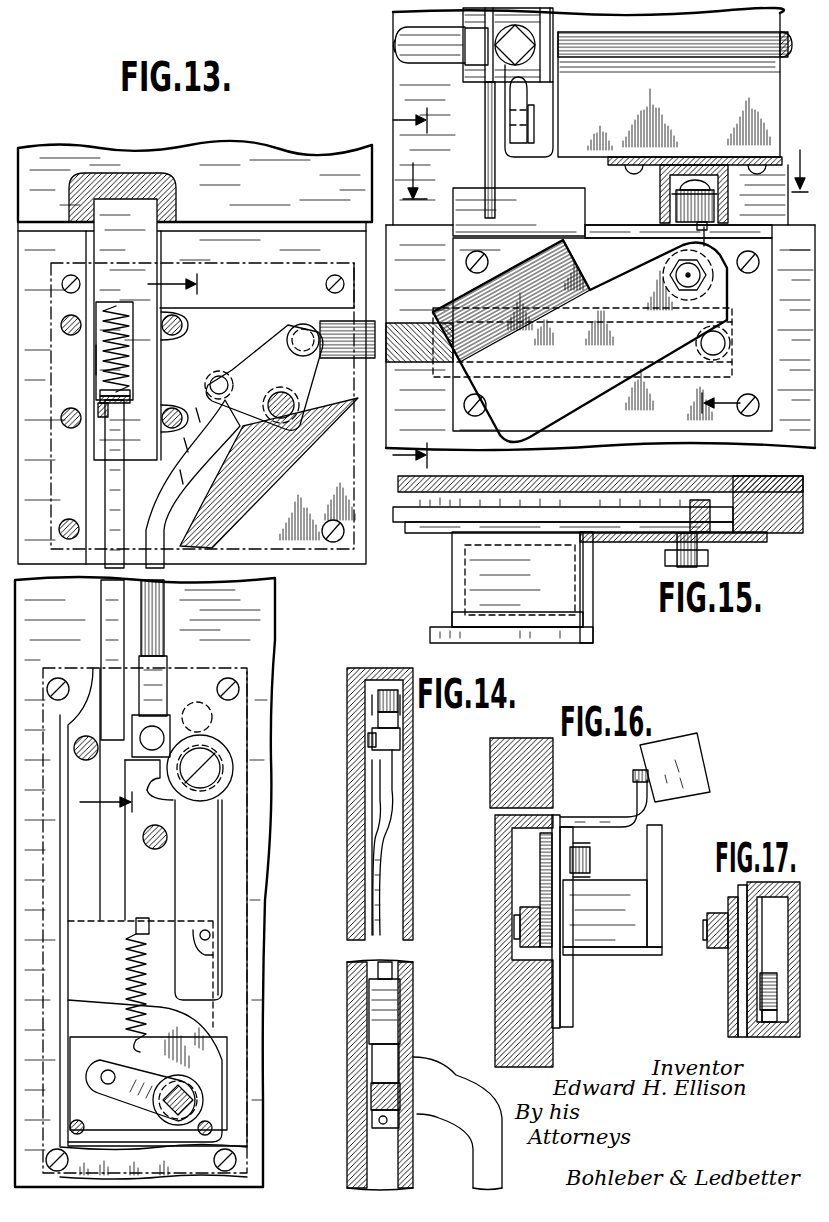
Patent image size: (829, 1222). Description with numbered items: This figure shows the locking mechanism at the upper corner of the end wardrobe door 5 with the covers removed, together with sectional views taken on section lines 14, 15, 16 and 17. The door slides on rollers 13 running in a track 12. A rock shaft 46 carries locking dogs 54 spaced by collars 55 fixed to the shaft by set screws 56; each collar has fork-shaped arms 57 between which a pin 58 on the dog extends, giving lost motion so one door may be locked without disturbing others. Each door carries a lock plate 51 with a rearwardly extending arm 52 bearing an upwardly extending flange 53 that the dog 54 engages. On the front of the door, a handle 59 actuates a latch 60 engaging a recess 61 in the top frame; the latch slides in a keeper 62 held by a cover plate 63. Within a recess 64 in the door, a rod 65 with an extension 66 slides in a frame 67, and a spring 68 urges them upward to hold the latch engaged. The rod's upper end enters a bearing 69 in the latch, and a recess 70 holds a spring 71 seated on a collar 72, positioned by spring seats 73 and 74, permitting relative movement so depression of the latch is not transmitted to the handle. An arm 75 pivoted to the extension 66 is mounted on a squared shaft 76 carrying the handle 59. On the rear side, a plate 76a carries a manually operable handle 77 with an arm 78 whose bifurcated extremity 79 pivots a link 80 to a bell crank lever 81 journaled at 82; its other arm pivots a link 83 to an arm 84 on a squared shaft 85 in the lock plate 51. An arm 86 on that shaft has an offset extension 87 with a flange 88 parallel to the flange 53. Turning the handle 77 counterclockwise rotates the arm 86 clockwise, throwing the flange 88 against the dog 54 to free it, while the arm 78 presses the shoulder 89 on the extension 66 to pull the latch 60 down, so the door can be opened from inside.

In FIG. 13, the wardrobe door 5 is at (259, 240).
In FIG. 15, the wardrobe door 5 is at (717, 488).
In FIG. 14, the wardrobe door 5 is at (360, 1029).
In FIG. 16, the wardrobe door 5 is at (512, 976).
In FIG. 17, the wardrobe door 5 is at (749, 890).
In FIG. 13, the track 12 is at (660, 196).
In FIG. 13, the roller 13 is at (685, 207).
In FIG. 13, the section line 14- 14 is at (152, 543).
In FIG. 13, the section line 15- 15 is at (608, 186).
In FIG. 13, the section line 16- 16 is at (424, 288).
In FIG. 13, the section line 17- 17 is at (709, 318).
In FIG. 13, the rock shaft 46 is at (425, 45).
In FIG. 13, the lock plate 51 is at (749, 378).
In FIG. 15, the lock plate 51 is at (764, 540).
In FIG. 16, the lock plate 51 is at (558, 965).
In FIG. 17, the lock plate 51 is at (738, 1015).
In FIG. 13, the rearwardly extending arm 52 is at (604, 236).
In FIG. 15, the rearwardly extending arm 52 is at (452, 571).
In FIG. 16, the rearwardly extending arm 52 is at (594, 818).
In FIG. 13, the upwardly extending flange 53 is at (542, 197).
In FIG. 15, the upwardly extending flange 53 is at (527, 618).
In FIG. 16, the upwardly extending flange 53 is at (636, 775).
In FIG. 13, the locking dog 54 is at (485, 163).
In FIG. 16, the locking dog 54 is at (695, 745).
In FIG. 13, the collar 55 is at (470, 20).
In FIG. 13, the set screw 56 is at (505, 48).
In FIG. 13, the fork-shaped arm 57 is at (520, 133).
In FIG. 13, the pin 58 is at (505, 115).
In FIG. 13, the handle 59 is at (157, 1177).
In FIG. 13, the latch 60 is at (130, 222).
In FIG. 13, the recess 61 is at (92, 188).
In FIG. 13, the keeper 62 is at (160, 253).
In FIG. 13, the cover plate 63 is at (297, 263).
In FIG. 13, the recess 64 is at (255, 308).
In FIG. 13, the rod 65 is at (105, 510).
In FIG. 13, the extension 66 is at (107, 840).
In FIG. 13, the frame 67 is at (87, 920).
In FIG. 13, the spring 68 is at (125, 985).
In FIG. 13, the bearing 69 is at (103, 417).
In FIG. 13, the recess 70 is at (96, 360).
In FIG. 13, the spring 71 is at (130, 355).
In FIG. 13, the collar 72 is at (130, 398).
In FIG. 13, the spring seat 73 is at (100, 392).
In FIG. 13, the spring seat 74 is at (96, 310).
In FIG. 13, the arm 75 is at (125, 1098).
In FIG. 13, the squared shaft 76 is at (192, 1098).
In FIG. 13, the plate 76a is at (238, 883).
In FIG. 14, the plate 76a is at (400, 830).
In FIG. 13, the manually operable handle 77 is at (215, 908).
In FIG. 14, the manually operable handle 77 is at (473, 1148).
In FIG. 13, the arm 78 is at (160, 737).
In FIG. 13, the bifurcated extremity 79 is at (140, 737).
In FIG. 14, the bifurcated extremity 79 is at (395, 1050).
In FIG. 13, the link 80 is at (165, 623).
In FIG. 14, the link 80 is at (383, 880).
In FIG. 13, the bell crank lever 81 is at (252, 380).
In FIG. 14, the bell crank lever 81 is at (400, 735).
In FIG. 13, the pivot 82 is at (280, 418).
In FIG. 14, the pivot 82 is at (368, 740).
In FIG. 13, the link 83 is at (417, 330).
In FIG. 15, the link 83 is at (565, 507).
In FIG. 14, the link 83 is at (385, 690).
In FIG. 16, the link 83 is at (535, 935).
In FIG. 17, the link 83 is at (767, 1020).
In FIG. 13, the arm 84 is at (724, 340).
In FIG. 15, the arm 84 is at (702, 525).
In FIG. 16, the arm 84 is at (545, 887).
In FIG. 17, the arm 84 is at (765, 975).
In FIG. 13, the squared shaft 85 is at (710, 288).
In FIG. 15, the squared shaft 85 is at (677, 566).
In FIG. 16, the squared shaft 85 is at (592, 857).
In FIG. 17, the squared shaft 85 is at (709, 945).
In FIG. 13, the arm 86 is at (615, 378).
In FIG. 16, the arm 86 is at (573, 1010).
In FIG. 17, the arm 86 is at (728, 985).
In FIG. 13, the offset extension 87 is at (510, 343).
In FIG. 15, the offset extension 87 is at (590, 595).
In FIG. 16, the offset extension 87 is at (622, 955).
In FIG. 13, the flange 88 is at (478, 290).
In FIG. 15, the flange 88 is at (517, 643).
In FIG. 16, the flange 88 is at (662, 857).
In FIG. 13, the shoulder 89 is at (173, 800).
In FIG. 14, the shoulder 89 is at (371, 1098).